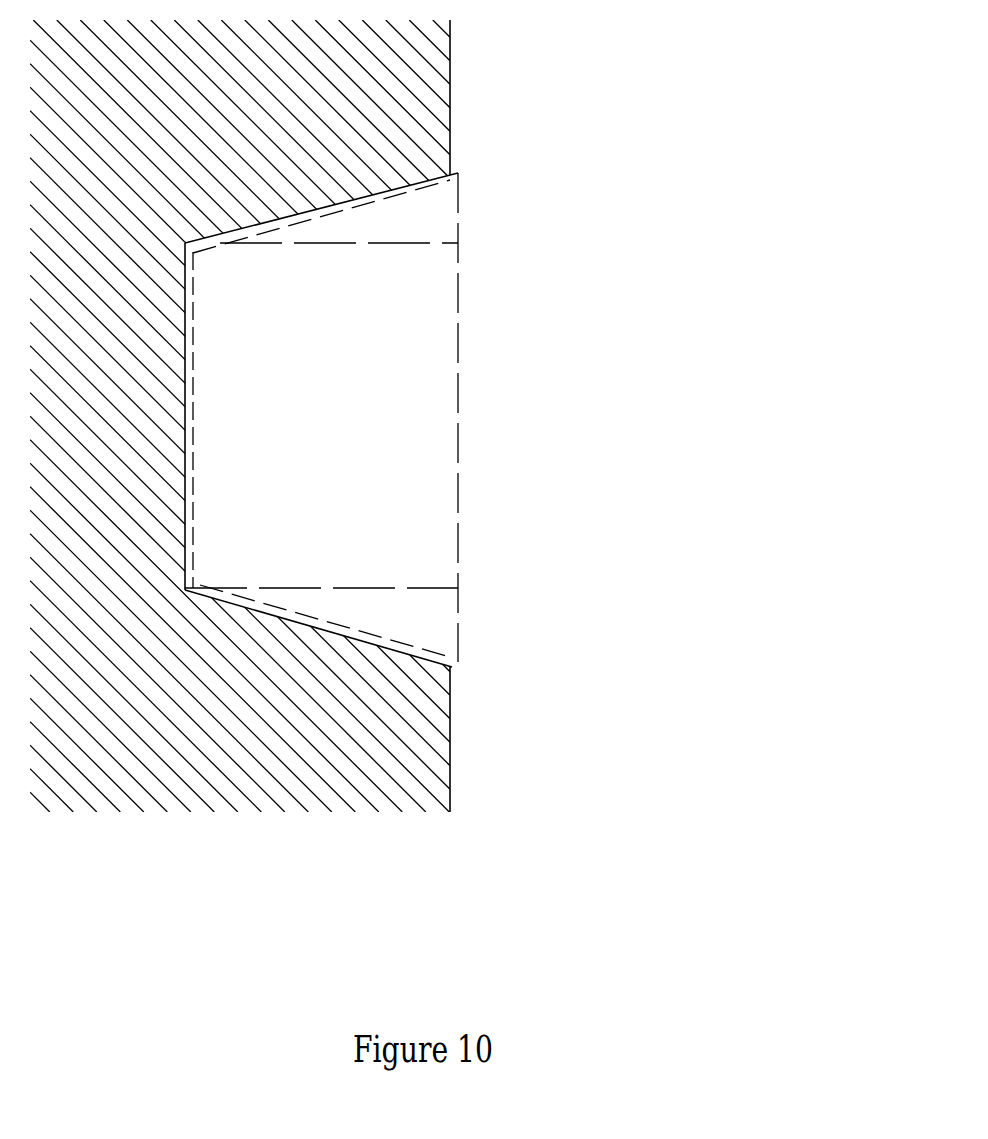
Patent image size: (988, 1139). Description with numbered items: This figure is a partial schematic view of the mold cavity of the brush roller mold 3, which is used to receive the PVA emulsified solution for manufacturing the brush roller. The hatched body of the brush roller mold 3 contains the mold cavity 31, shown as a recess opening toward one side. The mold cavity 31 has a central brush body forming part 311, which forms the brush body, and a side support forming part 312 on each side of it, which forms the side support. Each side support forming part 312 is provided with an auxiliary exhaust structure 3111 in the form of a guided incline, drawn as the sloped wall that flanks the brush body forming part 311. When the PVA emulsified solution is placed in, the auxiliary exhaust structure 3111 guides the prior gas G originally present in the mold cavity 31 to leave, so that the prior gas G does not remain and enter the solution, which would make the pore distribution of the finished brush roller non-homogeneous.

The brush roller mold 3 is at (68, 783).
The mold cavity 31 is at (680, 182).
The brush body forming part 311 is at (475, 250).
The side support forming part 312 is at (473, 163).
The auxiliary exhaust structure 3111 is at (413, 163).
The prior gas G is at (287, 612).